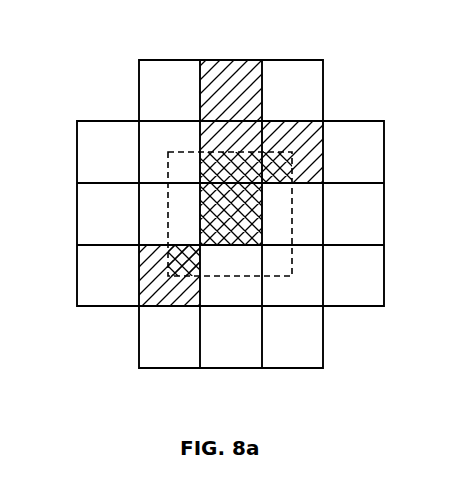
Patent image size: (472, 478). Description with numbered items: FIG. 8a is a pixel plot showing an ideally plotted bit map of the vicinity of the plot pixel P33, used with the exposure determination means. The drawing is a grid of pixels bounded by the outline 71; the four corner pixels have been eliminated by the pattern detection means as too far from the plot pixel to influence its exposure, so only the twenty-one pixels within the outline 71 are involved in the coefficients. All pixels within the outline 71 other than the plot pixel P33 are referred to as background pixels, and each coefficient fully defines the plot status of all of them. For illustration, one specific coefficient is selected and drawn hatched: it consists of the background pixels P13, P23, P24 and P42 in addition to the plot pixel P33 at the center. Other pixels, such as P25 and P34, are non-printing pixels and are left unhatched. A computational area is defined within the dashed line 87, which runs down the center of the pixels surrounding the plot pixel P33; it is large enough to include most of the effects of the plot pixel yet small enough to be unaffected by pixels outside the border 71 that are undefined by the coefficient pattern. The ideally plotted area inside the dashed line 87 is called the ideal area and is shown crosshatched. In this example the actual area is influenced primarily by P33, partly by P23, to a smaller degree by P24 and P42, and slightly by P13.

The outline 71 is at (138, 71).
The pixel P13 is at (227, 75).
The pixel P23 is at (250, 130).
The pixel P24 is at (318, 132).
The pixel P25 is at (370, 157).
The plot pixel P33 is at (205, 228).
The pixel P34 is at (307, 228).
The pixel P42 is at (150, 292).
The dashed line 87 is at (293, 256).